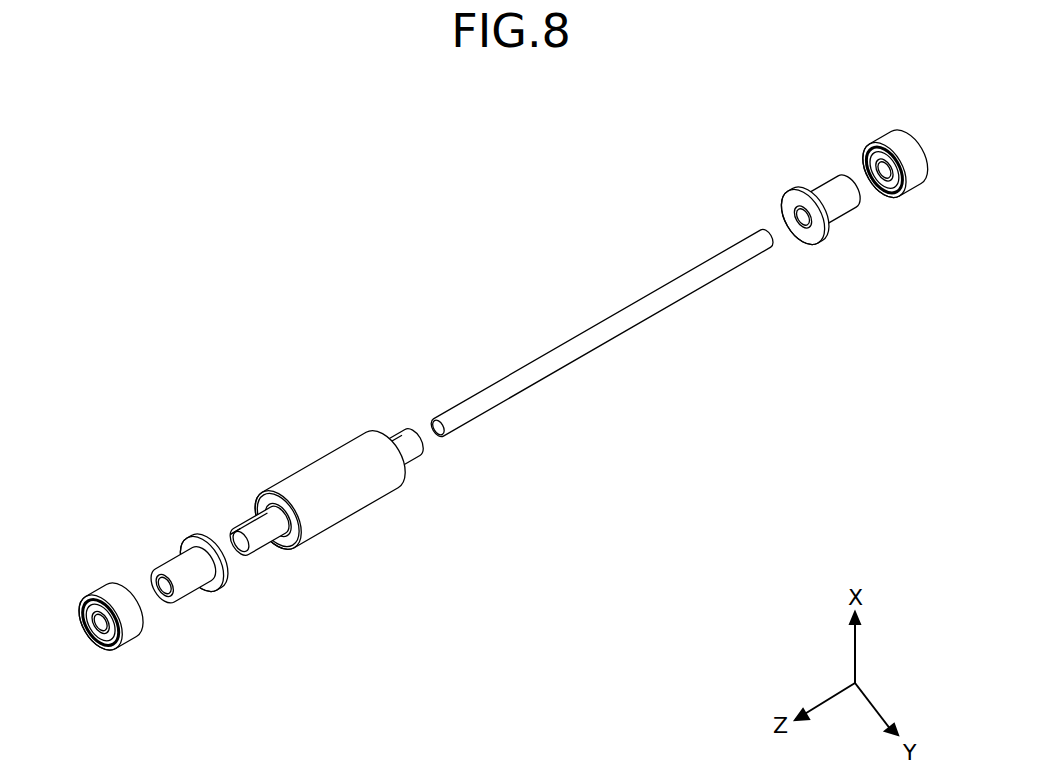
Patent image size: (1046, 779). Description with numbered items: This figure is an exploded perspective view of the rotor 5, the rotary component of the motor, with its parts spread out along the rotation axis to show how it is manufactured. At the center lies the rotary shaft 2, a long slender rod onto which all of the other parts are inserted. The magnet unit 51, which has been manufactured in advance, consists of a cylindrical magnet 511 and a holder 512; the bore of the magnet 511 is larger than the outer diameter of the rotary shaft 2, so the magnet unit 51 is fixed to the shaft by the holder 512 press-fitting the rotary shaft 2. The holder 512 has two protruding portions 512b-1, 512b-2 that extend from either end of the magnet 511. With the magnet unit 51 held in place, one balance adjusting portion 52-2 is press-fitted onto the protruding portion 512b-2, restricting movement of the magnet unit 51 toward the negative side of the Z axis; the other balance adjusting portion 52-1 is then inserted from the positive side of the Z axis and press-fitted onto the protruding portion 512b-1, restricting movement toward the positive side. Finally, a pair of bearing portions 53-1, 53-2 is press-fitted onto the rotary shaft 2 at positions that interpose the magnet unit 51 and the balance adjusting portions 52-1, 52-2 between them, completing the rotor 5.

The rotor 5 is at (402, 210).
The rotary shaft 2 is at (565, 350).
The magnet unit 51 is at (348, 380).
The magnet 511 is at (318, 488).
The holder 512 is at (252, 476).
The protruding portion 512b-1 is at (268, 540).
The protruding portion 512b-2 is at (408, 455).
The balance adjusting portion 52-1 is at (180, 560).
The balance adjusting portion 52-2 is at (822, 193).
The bearing portion 53-1 is at (107, 595).
The bearing portion 53-2 is at (900, 148).